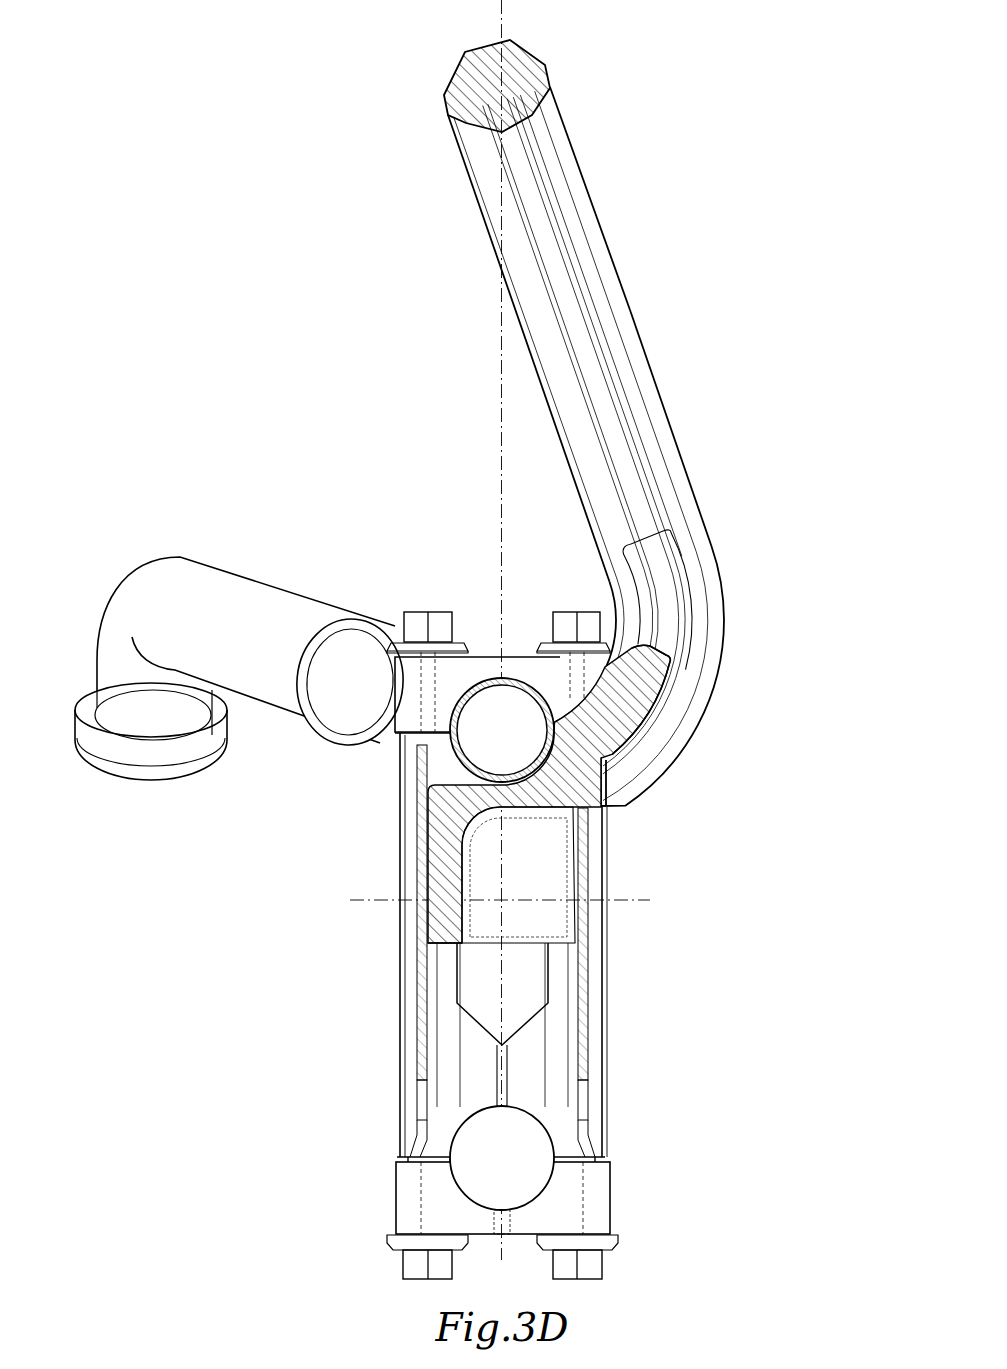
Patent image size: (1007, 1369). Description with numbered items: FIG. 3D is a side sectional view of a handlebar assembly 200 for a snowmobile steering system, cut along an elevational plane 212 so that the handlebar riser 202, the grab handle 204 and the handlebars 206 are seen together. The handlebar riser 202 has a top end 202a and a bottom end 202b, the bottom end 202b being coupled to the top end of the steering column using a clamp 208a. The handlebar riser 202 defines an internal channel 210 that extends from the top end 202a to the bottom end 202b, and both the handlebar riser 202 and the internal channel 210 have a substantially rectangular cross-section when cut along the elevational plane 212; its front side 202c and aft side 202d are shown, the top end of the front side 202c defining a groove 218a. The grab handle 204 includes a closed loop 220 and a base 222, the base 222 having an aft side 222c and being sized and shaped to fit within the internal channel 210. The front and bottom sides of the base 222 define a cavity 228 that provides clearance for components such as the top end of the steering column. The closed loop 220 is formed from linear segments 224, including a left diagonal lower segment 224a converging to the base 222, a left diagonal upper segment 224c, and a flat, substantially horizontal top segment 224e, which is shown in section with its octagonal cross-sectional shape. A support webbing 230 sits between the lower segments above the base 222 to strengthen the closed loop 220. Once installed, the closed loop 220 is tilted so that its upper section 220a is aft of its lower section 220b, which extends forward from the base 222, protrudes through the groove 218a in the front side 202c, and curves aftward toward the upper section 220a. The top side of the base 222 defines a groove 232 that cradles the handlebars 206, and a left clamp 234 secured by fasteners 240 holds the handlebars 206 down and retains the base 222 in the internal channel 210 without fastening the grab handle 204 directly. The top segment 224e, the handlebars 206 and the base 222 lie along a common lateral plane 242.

The handlebar assembly 200 is at (346, 386).
The handlebar riser 202 is at (500, 948).
The top end 202a is at (405, 787).
The bottom end 202b is at (400, 1143).
The front side 202c is at (590, 1009).
The aft side 202d is at (420, 972).
The grab handle 204 is at (650, 370).
The handlebars 206 is at (134, 592).
The clamp 208a is at (600, 1207).
The internal channel 210 is at (562, 1035).
The elevational plane 212 is at (650, 895).
The groove 218a is at (605, 793).
The closed loop 220 is at (635, 412).
The upper section 220a is at (563, 122).
The lower section 220b is at (720, 573).
The base 222 is at (527, 794).
The aft side 222c is at (391, 929).
The linear segments 224 is at (685, 470).
The left diagonal lower segment 224a is at (705, 528).
The left diagonal upper segment 224c is at (584, 182).
The top segment 224e is at (528, 47).
The cavity 228 is at (472, 815).
The support webbing 230 is at (668, 609).
The groove 232 is at (530, 787).
The left clamp 234 is at (393, 675).
The fasteners 240 is at (413, 602).
The common lateral plane 242 is at (500, 457).